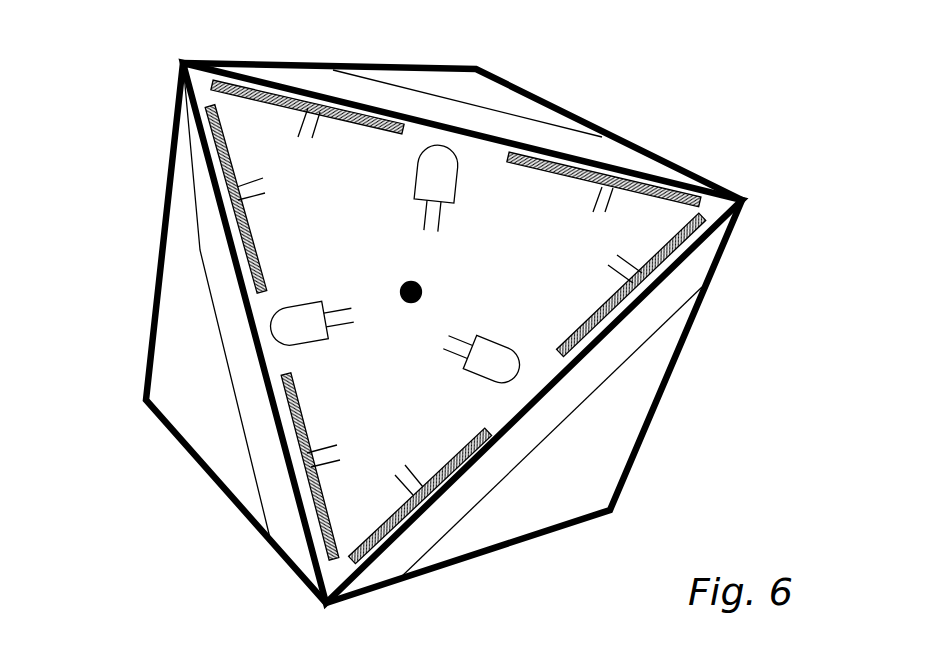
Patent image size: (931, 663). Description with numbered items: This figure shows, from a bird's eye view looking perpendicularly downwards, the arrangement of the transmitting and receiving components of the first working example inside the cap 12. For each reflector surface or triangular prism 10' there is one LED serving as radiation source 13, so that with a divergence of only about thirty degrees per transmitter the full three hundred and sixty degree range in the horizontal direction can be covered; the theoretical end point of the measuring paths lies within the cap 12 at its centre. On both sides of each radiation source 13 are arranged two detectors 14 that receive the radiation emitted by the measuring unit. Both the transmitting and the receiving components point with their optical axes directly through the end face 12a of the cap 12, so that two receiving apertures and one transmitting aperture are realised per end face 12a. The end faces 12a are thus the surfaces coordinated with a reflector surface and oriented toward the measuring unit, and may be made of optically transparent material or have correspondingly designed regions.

The triangular prism 10' is at (418, 311).
The cap 12 is at (518, 285).
The end face 12a is at (617, 157).
The radiation source 13 is at (443, 172).
The detector 14 is at (306, 112).